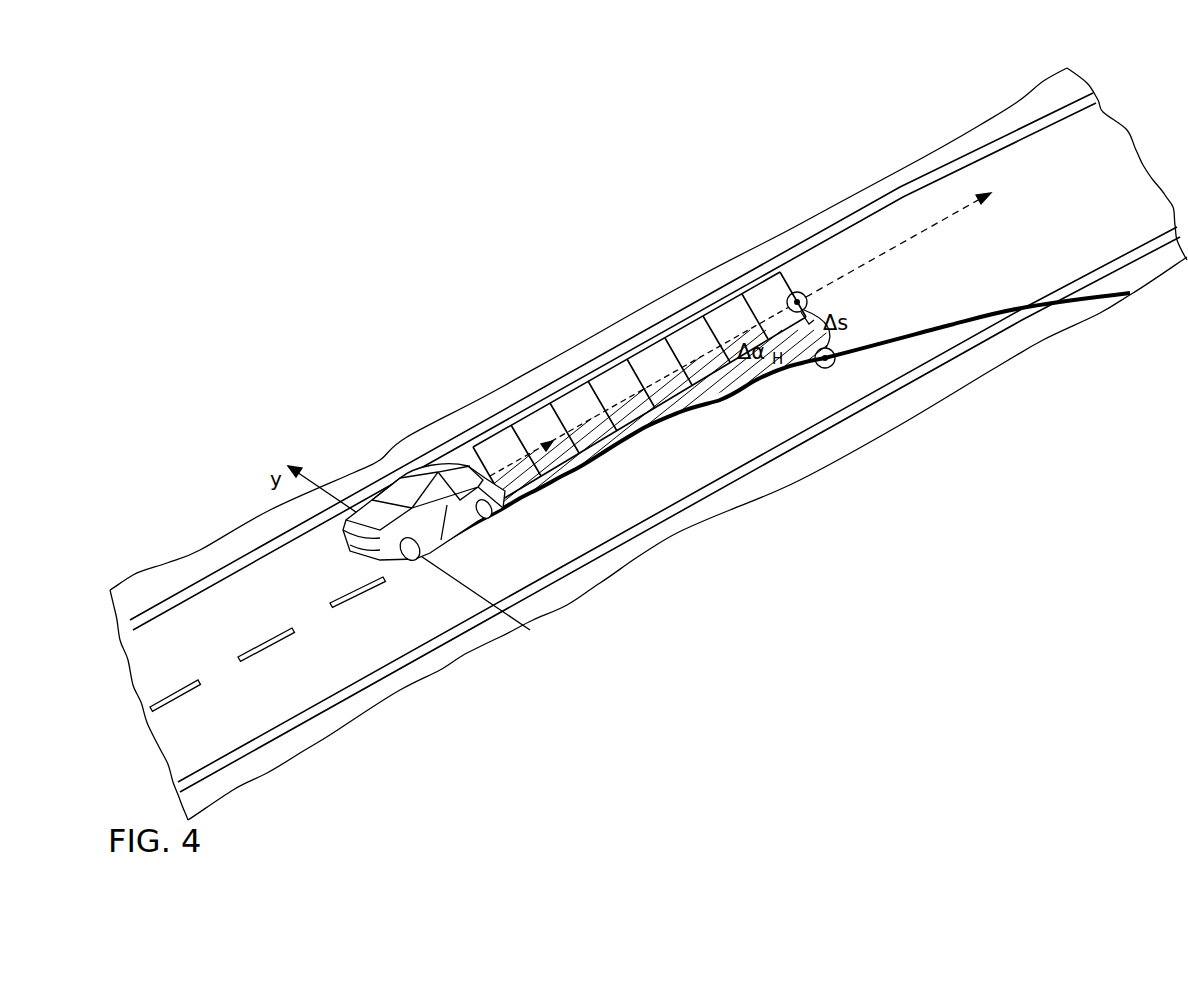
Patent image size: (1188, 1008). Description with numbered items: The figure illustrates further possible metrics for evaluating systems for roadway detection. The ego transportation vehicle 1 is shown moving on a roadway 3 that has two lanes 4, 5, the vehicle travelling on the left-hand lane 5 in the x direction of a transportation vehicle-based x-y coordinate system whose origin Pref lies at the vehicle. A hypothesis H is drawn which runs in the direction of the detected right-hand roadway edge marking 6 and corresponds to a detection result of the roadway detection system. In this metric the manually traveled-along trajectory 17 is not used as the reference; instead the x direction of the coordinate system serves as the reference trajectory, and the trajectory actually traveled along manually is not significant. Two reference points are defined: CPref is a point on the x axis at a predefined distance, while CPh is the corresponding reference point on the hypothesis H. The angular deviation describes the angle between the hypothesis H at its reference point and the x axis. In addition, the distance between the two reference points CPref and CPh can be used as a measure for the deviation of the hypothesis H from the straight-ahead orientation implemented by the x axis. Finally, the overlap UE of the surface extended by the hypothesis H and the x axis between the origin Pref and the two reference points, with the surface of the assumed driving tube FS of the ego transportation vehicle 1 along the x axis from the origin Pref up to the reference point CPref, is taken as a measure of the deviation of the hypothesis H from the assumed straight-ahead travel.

The ego transportation vehicle 1 is at (403, 485).
The roadway 3 is at (757, 512).
The lane 4 is at (408, 613).
The left-hand lane 5 is at (257, 577).
The right-hand roadway edge marking 6 is at (925, 367).
The manually traveled-along trajectory 17 is at (948, 217).
The assumed driving tube FS is at (615, 388).
The overlap UE is at (705, 370).
The origin of the coordinate system Pref is at (352, 453).
The reference point on the x axis CPref is at (793, 293).
The reference point on the hypothesis CPh is at (831, 366).
The hypothesis H is at (1027, 307).